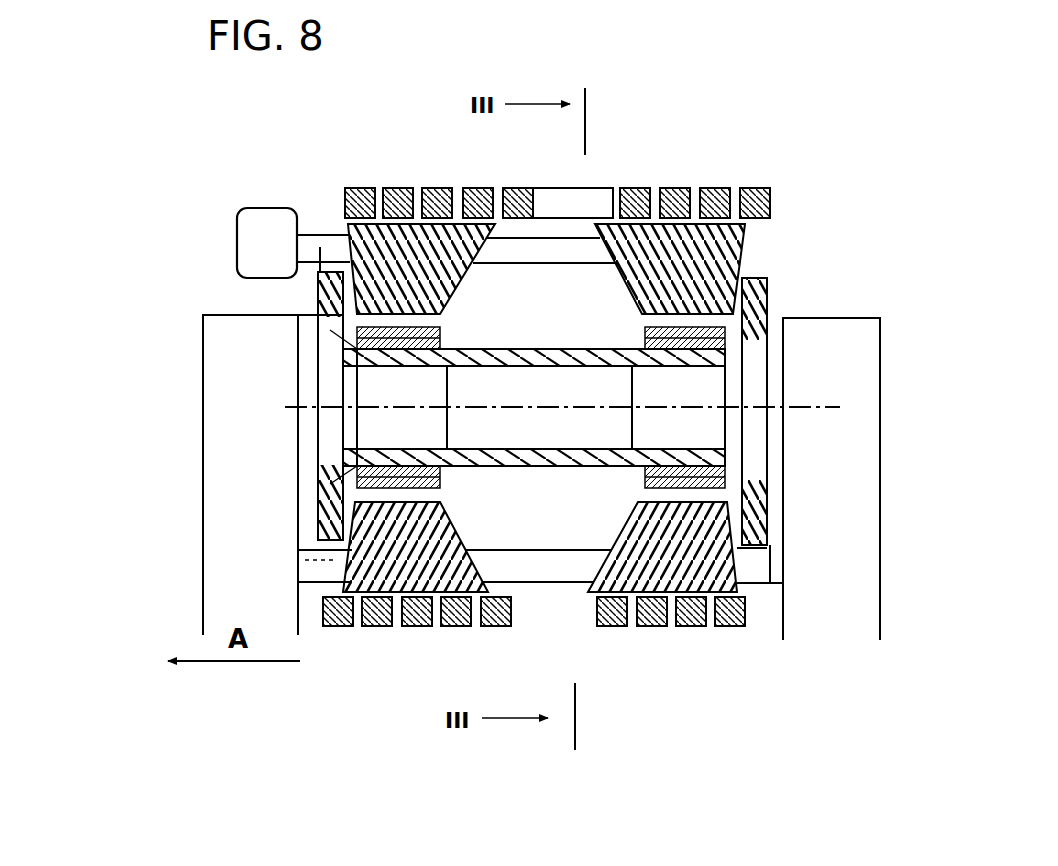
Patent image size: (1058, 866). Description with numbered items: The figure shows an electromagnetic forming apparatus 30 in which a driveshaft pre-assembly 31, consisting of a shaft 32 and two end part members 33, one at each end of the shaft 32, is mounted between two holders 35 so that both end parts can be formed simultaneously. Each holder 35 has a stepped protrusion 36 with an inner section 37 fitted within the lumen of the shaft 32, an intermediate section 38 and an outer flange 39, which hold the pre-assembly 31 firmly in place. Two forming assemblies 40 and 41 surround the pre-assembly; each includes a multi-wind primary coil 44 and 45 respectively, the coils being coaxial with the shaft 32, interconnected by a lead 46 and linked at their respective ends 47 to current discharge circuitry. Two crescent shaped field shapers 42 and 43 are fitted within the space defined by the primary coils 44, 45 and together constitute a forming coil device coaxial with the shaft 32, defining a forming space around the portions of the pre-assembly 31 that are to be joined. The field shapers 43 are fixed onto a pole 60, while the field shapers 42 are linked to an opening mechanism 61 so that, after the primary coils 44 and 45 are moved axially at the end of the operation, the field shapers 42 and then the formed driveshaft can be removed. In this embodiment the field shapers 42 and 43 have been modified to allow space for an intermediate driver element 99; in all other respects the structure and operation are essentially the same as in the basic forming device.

The apparatus 30 is at (186, 240).
The driveshaft pre-assembly 31 is at (347, 267).
The shaft 32 is at (513, 470).
The end part member 33 is at (768, 306).
The holder 35 is at (262, 509).
The stepped protrusion 36 is at (320, 433).
The inner section 37 is at (417, 394).
The intermediate section 38 is at (330, 383).
The outer flange 39 is at (320, 338).
The forming assembly 40 is at (422, 653).
The forming assembly 41 is at (692, 670).
The field shaper 42 is at (417, 282).
The field shaper 43 is at (417, 556).
The primary coil 44 is at (398, 187).
The primary coil 45 is at (668, 187).
The lead 46 is at (570, 212).
The end 47 is at (757, 187).
The pole 60 is at (557, 560).
The opening mechanism 61 is at (262, 232).
The driver element 99 is at (720, 342).